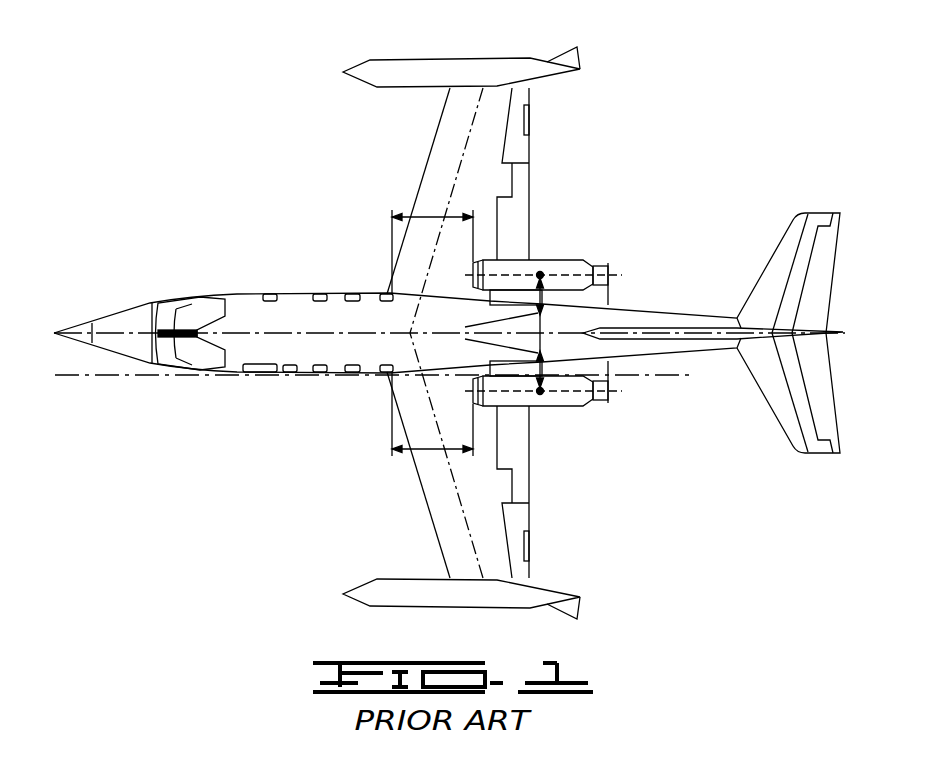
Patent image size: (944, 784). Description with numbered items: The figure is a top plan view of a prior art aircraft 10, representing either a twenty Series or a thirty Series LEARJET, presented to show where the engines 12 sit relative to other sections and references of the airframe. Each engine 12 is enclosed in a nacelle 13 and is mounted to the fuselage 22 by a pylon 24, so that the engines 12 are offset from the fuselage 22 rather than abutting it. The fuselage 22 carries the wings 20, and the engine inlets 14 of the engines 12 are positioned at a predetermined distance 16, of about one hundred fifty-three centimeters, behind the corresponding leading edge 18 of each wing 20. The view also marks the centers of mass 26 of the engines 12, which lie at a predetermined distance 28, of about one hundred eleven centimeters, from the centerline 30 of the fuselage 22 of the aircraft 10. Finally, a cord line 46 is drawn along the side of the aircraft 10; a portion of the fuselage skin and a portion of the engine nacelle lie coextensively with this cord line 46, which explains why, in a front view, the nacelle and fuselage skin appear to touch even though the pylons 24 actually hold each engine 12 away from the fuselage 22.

The prior art aircraft 10 is at (330, 48).
The engine 12 is at (604, 226).
The nacelle 13 is at (581, 260).
The engine inlet 14 is at (468, 258).
The predetermined distance 16 is at (425, 214).
The leading edge 18 is at (384, 288).
The wing 20 is at (478, 142).
The fuselage 22 is at (236, 288).
The pylon 24 is at (588, 297).
The center of mass 26 is at (539, 262).
The predetermined distance 28 is at (491, 333).
The centerline 30 is at (300, 332).
The cord line 46 is at (125, 375).